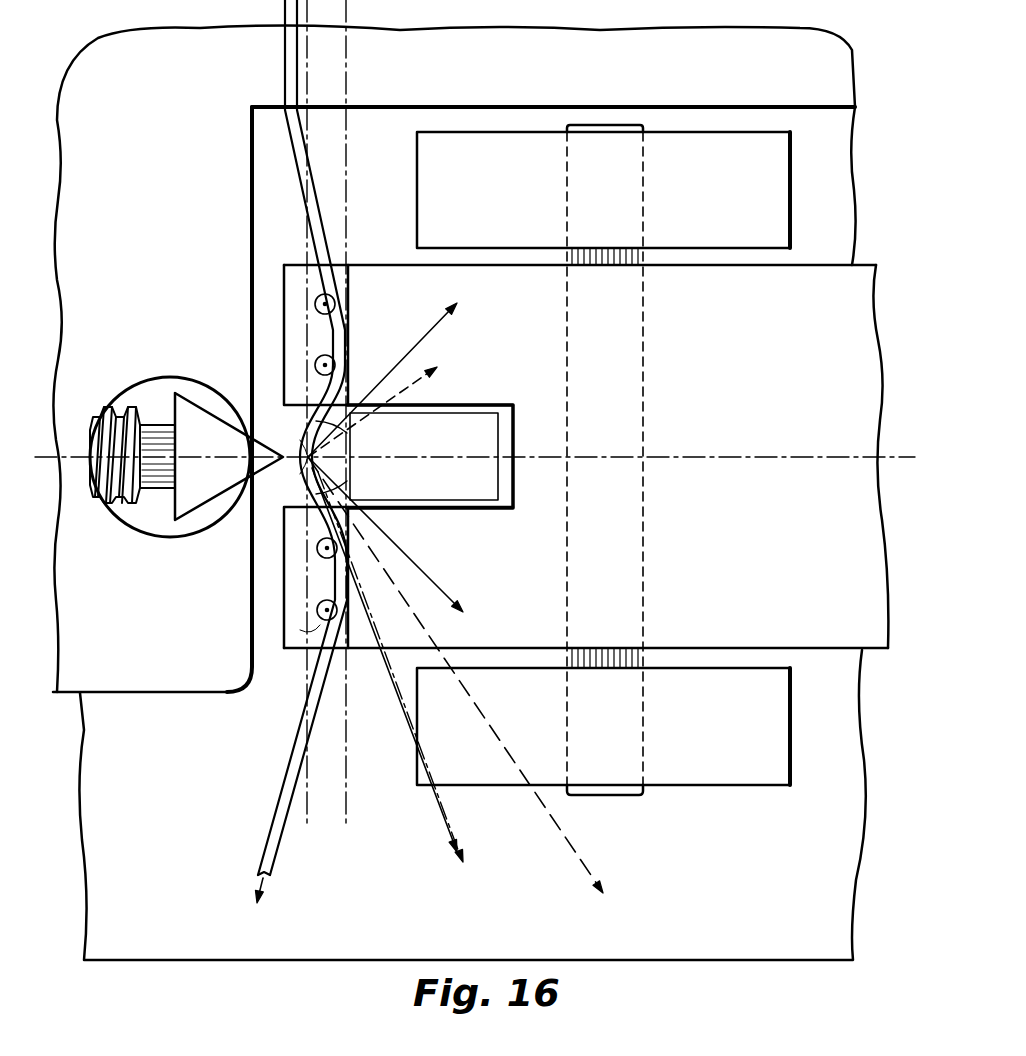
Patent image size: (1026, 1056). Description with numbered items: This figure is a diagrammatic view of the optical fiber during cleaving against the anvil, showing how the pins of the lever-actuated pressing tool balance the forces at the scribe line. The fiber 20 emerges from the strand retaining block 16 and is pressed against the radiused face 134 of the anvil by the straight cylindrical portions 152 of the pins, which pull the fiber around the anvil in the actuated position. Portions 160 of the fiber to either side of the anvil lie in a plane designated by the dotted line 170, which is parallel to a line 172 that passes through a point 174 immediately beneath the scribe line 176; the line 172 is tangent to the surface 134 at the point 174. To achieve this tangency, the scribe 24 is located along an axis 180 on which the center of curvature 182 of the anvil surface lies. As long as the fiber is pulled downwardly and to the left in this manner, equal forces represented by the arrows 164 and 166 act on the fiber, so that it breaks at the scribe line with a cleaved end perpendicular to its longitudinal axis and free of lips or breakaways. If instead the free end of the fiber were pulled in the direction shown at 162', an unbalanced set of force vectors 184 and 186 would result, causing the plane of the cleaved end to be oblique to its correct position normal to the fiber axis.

The strand retaining block 16 is at (473, 492).
The free portion of the fiber 20 is at (317, 217).
The scribe 24 is at (215, 451).
The radiused face of anvil 134 is at (347, 433).
The straight cylindrical lower portion of pin 152 is at (318, 620).
The portions of the fiber 160 is at (341, 334).
The incorrect pulling direction of free end 162' is at (420, 676).
The force arrow 164 is at (437, 578).
The force arrow 166 is at (434, 330).
The dotted line 170 is at (348, 822).
The tangent line 172 is at (307, 823).
The point 174 is at (298, 464).
The scribe line 176 is at (298, 452).
The axis 180 is at (628, 461).
The center of curvature 182 is at (767, 460).
The force vector 184 is at (583, 848).
The force vector 186 is at (413, 384).